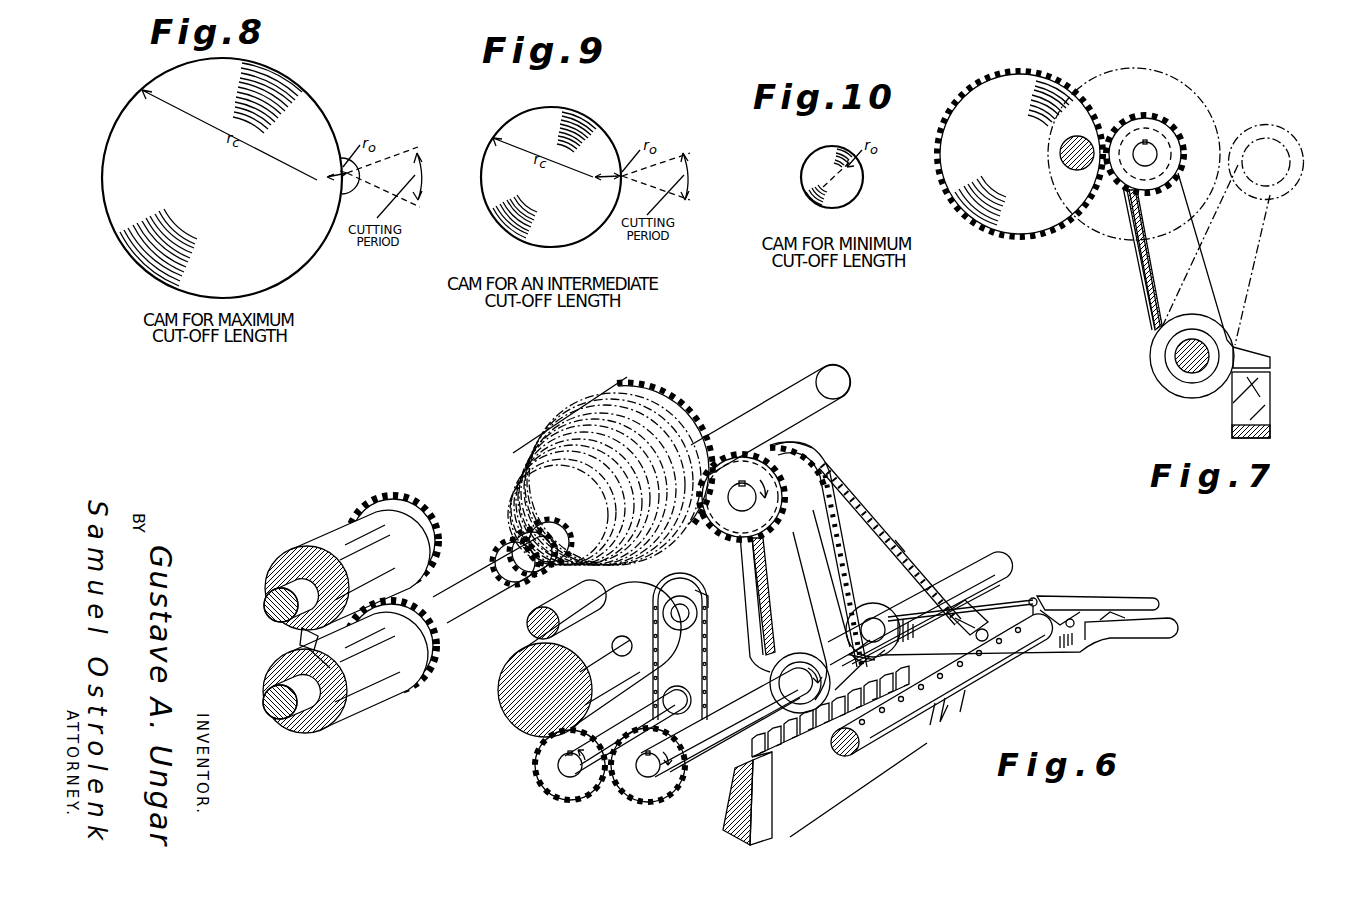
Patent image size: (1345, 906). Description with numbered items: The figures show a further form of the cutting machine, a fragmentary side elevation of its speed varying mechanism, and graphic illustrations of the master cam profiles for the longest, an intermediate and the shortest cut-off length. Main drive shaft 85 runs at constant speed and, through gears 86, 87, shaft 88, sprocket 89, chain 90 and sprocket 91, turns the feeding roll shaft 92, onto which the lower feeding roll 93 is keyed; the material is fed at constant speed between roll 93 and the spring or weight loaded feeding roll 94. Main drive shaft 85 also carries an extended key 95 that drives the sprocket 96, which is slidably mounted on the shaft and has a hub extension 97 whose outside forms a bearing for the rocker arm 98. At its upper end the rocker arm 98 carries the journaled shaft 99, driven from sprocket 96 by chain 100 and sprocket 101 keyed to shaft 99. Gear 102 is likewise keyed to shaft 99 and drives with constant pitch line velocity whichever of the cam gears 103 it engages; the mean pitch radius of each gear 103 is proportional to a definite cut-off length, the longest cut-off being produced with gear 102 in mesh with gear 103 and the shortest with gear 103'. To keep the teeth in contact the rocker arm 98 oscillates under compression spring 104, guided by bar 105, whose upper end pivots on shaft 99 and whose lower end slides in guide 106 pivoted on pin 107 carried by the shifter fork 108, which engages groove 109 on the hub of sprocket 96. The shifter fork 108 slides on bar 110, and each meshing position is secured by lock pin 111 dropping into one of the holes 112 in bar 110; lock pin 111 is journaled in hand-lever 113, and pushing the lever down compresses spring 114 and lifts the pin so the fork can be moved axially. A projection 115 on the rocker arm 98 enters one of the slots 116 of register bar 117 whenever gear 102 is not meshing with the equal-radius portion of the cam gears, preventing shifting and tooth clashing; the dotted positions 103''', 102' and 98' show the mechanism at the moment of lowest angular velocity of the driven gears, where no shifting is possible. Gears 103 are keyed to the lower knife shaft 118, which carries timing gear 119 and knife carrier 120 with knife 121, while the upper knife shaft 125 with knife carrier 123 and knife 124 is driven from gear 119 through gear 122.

In FIG. 7, the main drive shaft 85 is at (1186, 357).
In FIG. 6, the main drive shaft 85 is at (1000, 558).
In FIG. 6, the gear 86 is at (642, 803).
In FIG. 6, the gear 87 is at (568, 800).
In FIG. 6, the shaft 88 is at (648, 713).
In FIG. 6, the sprocket 89 is at (704, 635).
In FIG. 6, the chain 90 is at (704, 655).
In FIG. 6, the sprocket 91 is at (697, 600).
In FIG. 6, the feeding roll shaft 92 is at (678, 595).
In FIG. 6, the lower feeding roll 93 is at (505, 710).
In FIG. 6, the feeding roll 94 is at (527, 623).
In FIG. 7, the extended key 95 is at (1188, 342).
In FIG. 6, the extended key 95 is at (718, 701).
In FIG. 6, the sprocket 96 is at (895, 650).
In FIG. 6, the hub extension 97 is at (795, 703).
In FIG. 7, the rocker arm 98 is at (1171, 285).
In FIG. 6, the rocker arm 98 is at (770, 616).
In FIG. 7, the rocker arm dotted position 98' is at (1232, 255).
In FIG. 7, the shaft 99 is at (1151, 149).
In FIG. 6, the shaft 99 is at (735, 510).
In FIG. 6, the chain 100 is at (845, 580).
In FIG. 6, the sprocket 101 is at (822, 465).
In FIG. 7, the gear 102 is at (1145, 138).
In FIG. 6, the gear 102 is at (813, 447).
In FIG. 7, the gear dotted position 102' is at (1273, 152).
In FIG. 7, the gear 103 is at (1020, 144).
In FIG. 6, the gear 103 is at (610, 456).
In FIG. 6, the gear 103' is at (502, 539).
In FIG. 7, the cam gear dotted position 103''' is at (1134, 143).
In FIG. 6, the compression spring 104 is at (868, 503).
In FIG. 6, the bar 105 is at (898, 543).
In FIG. 6, the guide 106 is at (965, 600).
In FIG. 6, the pin 107 is at (990, 612).
In FIG. 6, the shifter fork 108 is at (1040, 660).
In FIG. 6, the groove 109 is at (858, 598).
In FIG. 6, the bar 110 is at (975, 690).
In FIG. 6, the lock pin 111 is at (1047, 600).
In FIG. 6, the holes 112 is at (948, 705).
In FIG. 6, the hand-lever 113 is at (1148, 600).
In FIG. 6, the spring 114 is at (1138, 632).
In FIG. 7, the projection 115 is at (1247, 352).
In FIG. 6, the projection 115 is at (912, 725).
In FIG. 6, the slots 116 is at (815, 772).
In FIG. 7, the register bar 117 is at (1270, 432).
In FIG. 6, the register bar 117 is at (790, 837).
In FIG. 6, the lower knife shaft 118 is at (278, 722).
In FIG. 6, the timing gear 119 is at (438, 652).
In FIG. 6, the knife carrier 120 is at (330, 728).
In FIG. 6, the knife 121 is at (305, 650).
In FIG. 6, the gear 122 is at (425, 506).
In FIG. 6, the knife carrier 123 is at (290, 565).
In FIG. 6, the knife 124 is at (300, 634).
In FIG. 6, the upper knife shaft 125 is at (264, 600).